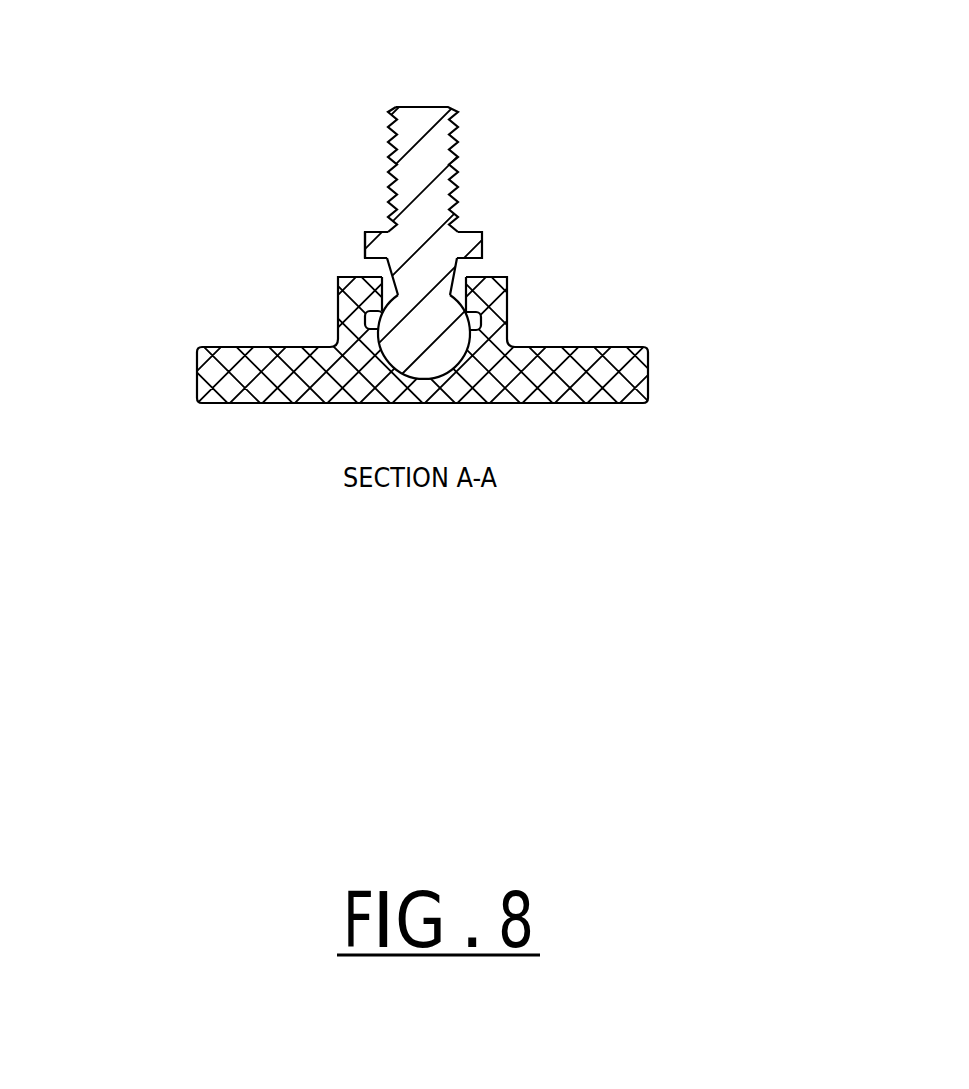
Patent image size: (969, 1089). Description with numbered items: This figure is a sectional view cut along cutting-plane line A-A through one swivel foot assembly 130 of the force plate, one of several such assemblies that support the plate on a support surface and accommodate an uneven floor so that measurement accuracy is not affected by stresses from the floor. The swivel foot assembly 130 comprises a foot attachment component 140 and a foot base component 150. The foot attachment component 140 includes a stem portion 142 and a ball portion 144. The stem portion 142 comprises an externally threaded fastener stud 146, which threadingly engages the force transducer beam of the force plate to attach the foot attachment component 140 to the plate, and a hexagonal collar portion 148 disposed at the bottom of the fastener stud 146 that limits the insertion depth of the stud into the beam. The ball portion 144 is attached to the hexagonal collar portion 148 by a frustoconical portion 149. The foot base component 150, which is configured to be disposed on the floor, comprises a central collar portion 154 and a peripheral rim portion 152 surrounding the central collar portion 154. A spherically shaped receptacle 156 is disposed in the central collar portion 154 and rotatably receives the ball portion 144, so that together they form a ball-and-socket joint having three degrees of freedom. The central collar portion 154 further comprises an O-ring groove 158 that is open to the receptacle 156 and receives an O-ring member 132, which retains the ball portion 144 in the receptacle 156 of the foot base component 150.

The swivel foot assembly 130 is at (440, 282).
The O-ring member 132 is at (470, 318).
The foot attachment component 140 is at (353, 232).
The stem portion 142 is at (419, 275).
The ball portion 144 is at (423, 338).
The fastener stud 146 is at (460, 150).
The hexagonal collar portion 148 is at (482, 243).
The frustoconical portion 149 is at (487, 288).
The foot base component 150 is at (322, 418).
The peripheral rim portion 152 is at (440, 374).
The central collar portion 154 is at (337, 277).
The receptacle 156 is at (385, 297).
The O-ring groove 158 is at (372, 318).